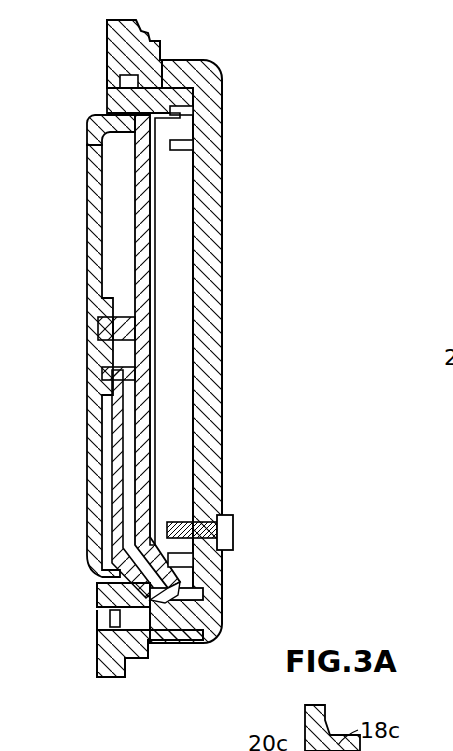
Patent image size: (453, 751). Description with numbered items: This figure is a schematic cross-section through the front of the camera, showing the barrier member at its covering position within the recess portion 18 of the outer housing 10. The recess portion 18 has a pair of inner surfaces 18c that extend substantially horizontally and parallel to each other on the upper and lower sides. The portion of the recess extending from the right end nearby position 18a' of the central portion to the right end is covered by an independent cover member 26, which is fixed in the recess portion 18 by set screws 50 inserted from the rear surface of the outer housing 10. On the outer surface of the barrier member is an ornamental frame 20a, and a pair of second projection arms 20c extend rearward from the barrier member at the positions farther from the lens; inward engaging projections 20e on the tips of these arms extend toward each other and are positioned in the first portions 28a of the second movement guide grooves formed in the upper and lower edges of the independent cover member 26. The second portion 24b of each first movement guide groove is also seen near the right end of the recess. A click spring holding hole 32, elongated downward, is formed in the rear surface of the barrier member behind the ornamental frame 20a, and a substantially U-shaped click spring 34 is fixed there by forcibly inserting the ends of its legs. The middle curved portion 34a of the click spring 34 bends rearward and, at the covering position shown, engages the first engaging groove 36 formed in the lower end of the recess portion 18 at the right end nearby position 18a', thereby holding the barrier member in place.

The outer housing 10 is at (222, 241).
The recess portion 18 is at (182, 311).
The right end nearby position 18a' is at (240, 337).
The inner surfaces 18c is at (88, 142).
The ornamental frame 20a is at (87, 214).
The second projection arms 20c is at (222, 79).
The inward engaging projections 20e is at (222, 111).
The second portion of first movement guide groove 24b is at (150, 48).
The independent cover member 26 is at (157, 367).
The first portion of second movement guide groove 28a is at (220, 147).
The click spring holding hole 32 is at (98, 330).
The click spring 34 is at (137, 444).
The middle curved portion 34a is at (186, 634).
The first engaging groove 36 is at (205, 600).
The set screws 50 is at (235, 523).